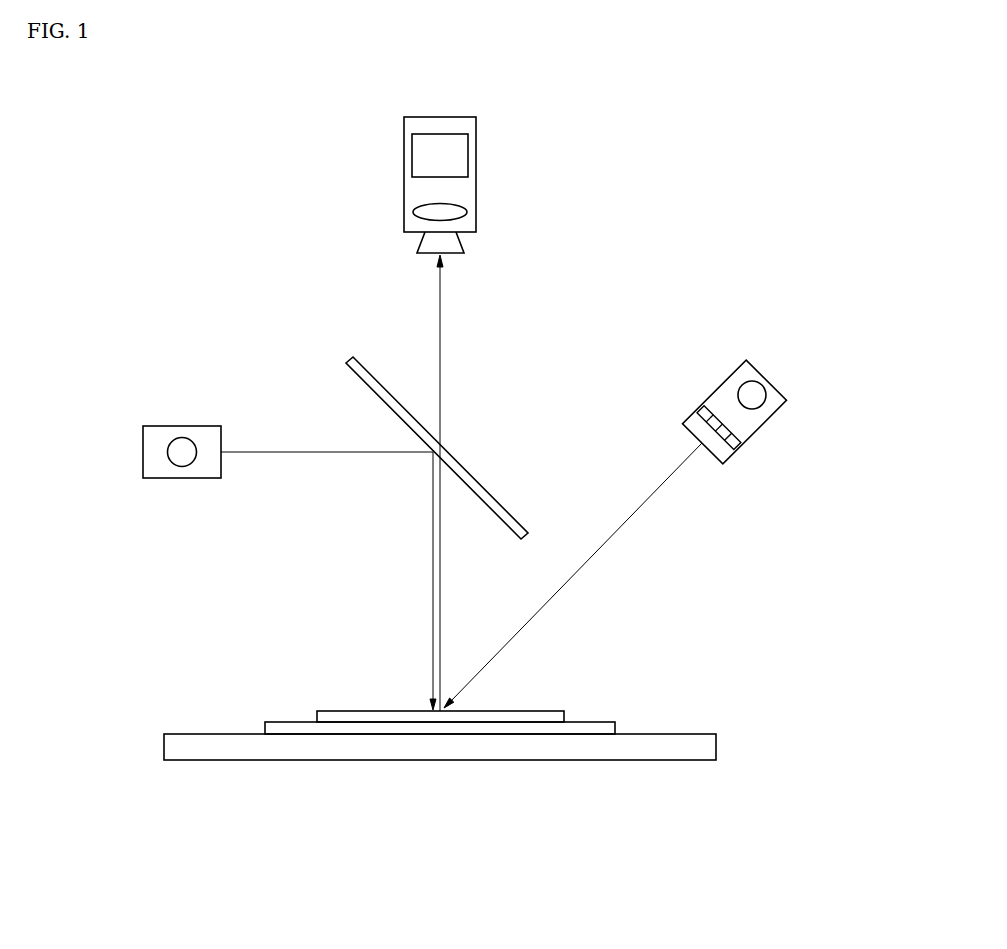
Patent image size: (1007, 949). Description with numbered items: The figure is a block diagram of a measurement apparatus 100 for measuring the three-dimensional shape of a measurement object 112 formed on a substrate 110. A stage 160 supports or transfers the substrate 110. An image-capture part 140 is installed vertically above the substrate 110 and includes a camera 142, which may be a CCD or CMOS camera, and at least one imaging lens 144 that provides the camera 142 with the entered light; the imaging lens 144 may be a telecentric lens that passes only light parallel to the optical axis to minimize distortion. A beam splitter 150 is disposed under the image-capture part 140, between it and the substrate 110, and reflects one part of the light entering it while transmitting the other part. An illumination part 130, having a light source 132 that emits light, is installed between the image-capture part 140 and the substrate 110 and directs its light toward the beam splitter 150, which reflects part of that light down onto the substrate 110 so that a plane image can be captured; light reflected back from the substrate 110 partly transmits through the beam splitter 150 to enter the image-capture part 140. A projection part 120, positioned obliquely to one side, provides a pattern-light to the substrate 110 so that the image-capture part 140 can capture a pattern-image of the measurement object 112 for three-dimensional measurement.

The measurement apparatus 100 is at (624, 133).
The substrate 110 is at (365, 730).
The measurement object 112 is at (439, 719).
The projection part 120 is at (744, 412).
The illumination part 130 is at (133, 411).
The light source 132 is at (178, 437).
The image-capture part 140 is at (431, 185).
The camera 142 is at (468, 153).
The imaging lens 144 is at (468, 210).
The beam splitter 150 is at (492, 496).
The stage 160 is at (292, 757).